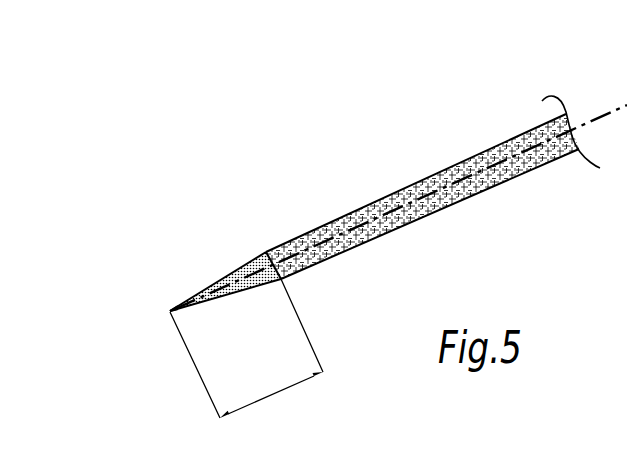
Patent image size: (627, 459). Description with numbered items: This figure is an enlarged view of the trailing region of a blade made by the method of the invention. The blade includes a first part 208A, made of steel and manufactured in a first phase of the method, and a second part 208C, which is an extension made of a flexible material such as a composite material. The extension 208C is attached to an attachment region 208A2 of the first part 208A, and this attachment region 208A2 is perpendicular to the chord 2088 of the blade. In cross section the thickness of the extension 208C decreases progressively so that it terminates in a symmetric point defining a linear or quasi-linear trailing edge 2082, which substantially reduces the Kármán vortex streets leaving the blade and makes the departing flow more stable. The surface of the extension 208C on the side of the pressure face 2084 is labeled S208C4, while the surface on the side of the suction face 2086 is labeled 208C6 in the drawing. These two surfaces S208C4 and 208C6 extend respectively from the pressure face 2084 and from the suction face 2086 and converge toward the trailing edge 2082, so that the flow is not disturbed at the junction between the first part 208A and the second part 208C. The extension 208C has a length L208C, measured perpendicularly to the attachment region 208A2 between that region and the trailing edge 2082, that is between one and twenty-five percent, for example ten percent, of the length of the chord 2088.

The trailing edge 2082 is at (160, 311).
The second part (extension) 208C is at (232, 275).
The pressure-side surface of the extension S208C4 is at (252, 249).
The lower tip surface 208C6 is at (211, 314).
The first part 208A is at (351, 222).
The attachment region 208A2 is at (261, 279).
The pressure face 2084 is at (460, 152).
The suction face 2086 is at (520, 188).
The chord 2088 is at (407, 206).
The length of the extension L208C is at (249, 351).